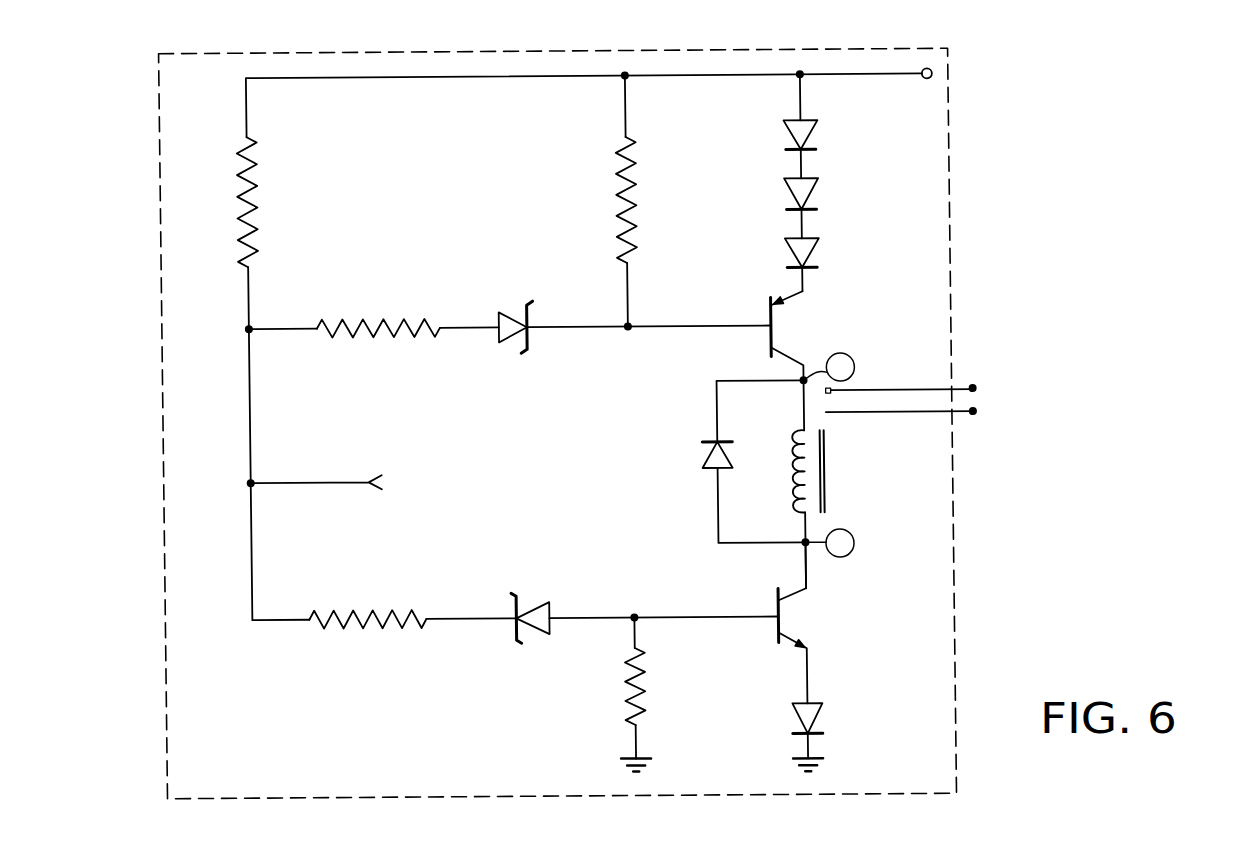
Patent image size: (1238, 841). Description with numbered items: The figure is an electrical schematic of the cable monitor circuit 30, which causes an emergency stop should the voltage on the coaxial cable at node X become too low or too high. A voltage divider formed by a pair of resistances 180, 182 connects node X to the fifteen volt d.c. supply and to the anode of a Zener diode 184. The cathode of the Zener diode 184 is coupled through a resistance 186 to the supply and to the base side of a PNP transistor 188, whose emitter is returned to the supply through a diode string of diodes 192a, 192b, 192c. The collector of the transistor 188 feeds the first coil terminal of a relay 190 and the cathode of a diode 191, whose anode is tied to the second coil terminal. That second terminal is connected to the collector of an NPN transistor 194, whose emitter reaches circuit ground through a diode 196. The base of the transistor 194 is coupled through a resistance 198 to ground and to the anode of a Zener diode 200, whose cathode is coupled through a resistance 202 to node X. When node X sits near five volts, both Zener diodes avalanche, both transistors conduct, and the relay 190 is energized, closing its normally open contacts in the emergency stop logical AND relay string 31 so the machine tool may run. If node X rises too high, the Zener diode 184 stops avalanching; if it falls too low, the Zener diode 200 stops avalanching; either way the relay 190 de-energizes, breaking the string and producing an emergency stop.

The cable monitor circuit 30 is at (579, 784).
The emergency stop logical AND relay string 31 is at (1025, 395).
The resistance 180 is at (254, 211).
The resistance 182 is at (366, 324).
The Zener diode 184 is at (529, 338).
The resistance 186 is at (629, 193).
The PNP transistor 188 is at (779, 337).
The relay 190 is at (825, 468).
The diode 191 is at (709, 471).
The diode 192a is at (816, 132).
The diode 192b is at (815, 192).
The diode 192c is at (814, 252).
The NPN transistor 194 is at (778, 620).
The diode 196 is at (822, 714).
The resistance 198 is at (640, 686).
The Zener diode 200 is at (528, 602).
The resistance 202 is at (346, 614).